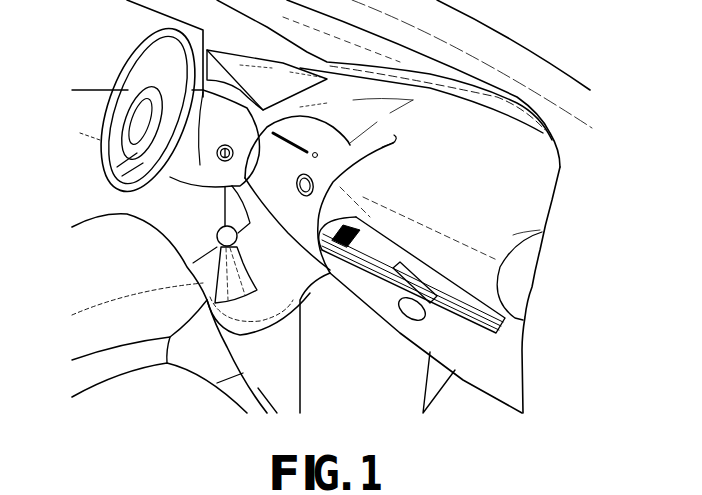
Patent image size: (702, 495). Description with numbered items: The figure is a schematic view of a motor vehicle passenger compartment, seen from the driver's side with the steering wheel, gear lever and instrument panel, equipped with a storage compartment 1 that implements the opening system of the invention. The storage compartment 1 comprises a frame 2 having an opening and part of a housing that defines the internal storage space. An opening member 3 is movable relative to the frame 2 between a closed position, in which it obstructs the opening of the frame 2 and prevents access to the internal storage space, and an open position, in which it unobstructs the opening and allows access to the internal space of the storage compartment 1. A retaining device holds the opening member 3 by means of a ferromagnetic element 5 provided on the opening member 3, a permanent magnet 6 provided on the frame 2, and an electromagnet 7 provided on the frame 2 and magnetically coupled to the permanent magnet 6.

The storage compartment 1 is at (535, 362).
The frame 2 is at (478, 275).
The opening member 3 is at (413, 327).
The ferromagnetic element 5 is at (403, 280).
The permanent magnet 6 is at (523, 316).
The electromagnet 7 is at (368, 230).